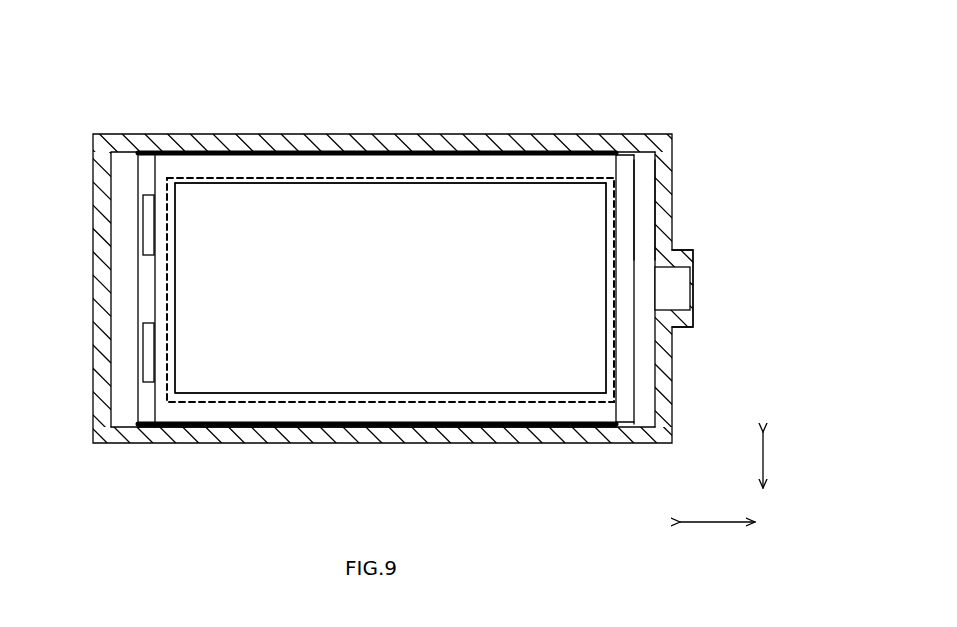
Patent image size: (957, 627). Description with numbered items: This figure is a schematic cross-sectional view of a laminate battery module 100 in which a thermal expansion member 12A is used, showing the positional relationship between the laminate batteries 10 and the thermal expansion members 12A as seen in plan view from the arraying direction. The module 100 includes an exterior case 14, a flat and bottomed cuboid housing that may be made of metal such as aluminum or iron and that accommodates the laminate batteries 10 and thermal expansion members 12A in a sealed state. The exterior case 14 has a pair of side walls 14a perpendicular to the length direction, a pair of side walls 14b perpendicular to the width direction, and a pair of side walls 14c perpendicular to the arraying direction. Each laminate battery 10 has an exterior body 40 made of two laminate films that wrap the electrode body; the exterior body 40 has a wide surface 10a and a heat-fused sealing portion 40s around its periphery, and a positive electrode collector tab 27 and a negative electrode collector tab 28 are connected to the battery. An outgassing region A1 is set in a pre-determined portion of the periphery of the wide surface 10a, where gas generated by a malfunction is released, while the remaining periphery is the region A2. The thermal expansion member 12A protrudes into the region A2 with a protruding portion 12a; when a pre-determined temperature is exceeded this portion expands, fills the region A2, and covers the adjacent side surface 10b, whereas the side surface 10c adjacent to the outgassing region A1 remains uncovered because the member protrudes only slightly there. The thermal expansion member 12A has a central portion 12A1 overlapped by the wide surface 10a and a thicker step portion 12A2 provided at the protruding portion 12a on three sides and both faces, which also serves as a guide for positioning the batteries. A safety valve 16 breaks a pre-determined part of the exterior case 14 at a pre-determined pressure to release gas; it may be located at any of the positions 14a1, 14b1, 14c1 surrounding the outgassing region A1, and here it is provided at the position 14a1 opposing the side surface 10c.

The laminate battery module 100 is at (138, 77).
The exterior case 14 is at (578, 444).
The side walls perpendicular to the length direction 14a is at (92, 247).
The position on side wall 14a1 is at (674, 290).
The side walls perpendicular to the width direction 14b is at (232, 134).
The position on side wall 14b1 is at (385, 435).
The side walls perpendicular to the arraying direction 14c is at (122, 183).
The position on side wall 14c1 is at (642, 165).
The safety valve 16 is at (693, 290).
The thermal expansion member 12A is at (138, 175).
The central portion 12A1 is at (475, 205).
The step portion 12A2 is at (513, 410).
The protruding portion 12a is at (245, 430).
The exterior body 40 is at (155, 397).
The sealing portion 40s is at (300, 412).
The positive electrode collector tab 27 is at (143, 352).
The negative electrode collector tab 28 is at (143, 220).
The laminate battery 10 is at (533, 207).
The wide surface 10a is at (377, 218).
The side surface adjacent to region A2 10b is at (175, 314).
The side surface adjacent to the outgassing region 10c is at (616, 233).
The outgassing region A1 is at (647, 176).
The region excluding the outgassing region A2 is at (124, 390).